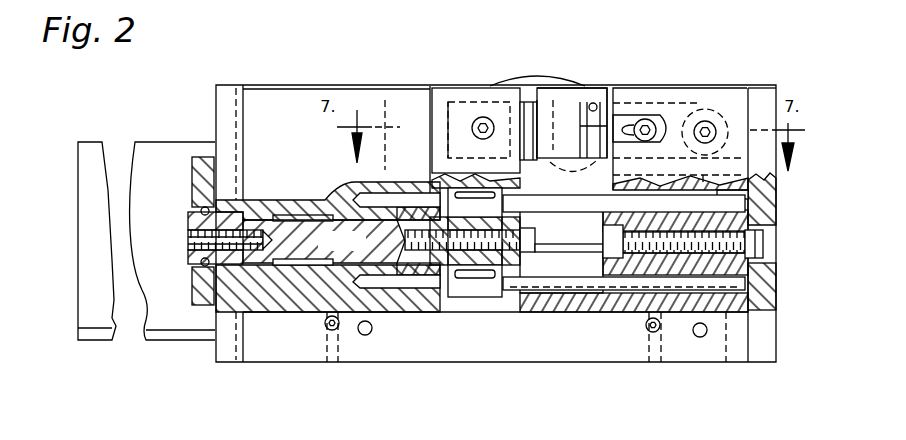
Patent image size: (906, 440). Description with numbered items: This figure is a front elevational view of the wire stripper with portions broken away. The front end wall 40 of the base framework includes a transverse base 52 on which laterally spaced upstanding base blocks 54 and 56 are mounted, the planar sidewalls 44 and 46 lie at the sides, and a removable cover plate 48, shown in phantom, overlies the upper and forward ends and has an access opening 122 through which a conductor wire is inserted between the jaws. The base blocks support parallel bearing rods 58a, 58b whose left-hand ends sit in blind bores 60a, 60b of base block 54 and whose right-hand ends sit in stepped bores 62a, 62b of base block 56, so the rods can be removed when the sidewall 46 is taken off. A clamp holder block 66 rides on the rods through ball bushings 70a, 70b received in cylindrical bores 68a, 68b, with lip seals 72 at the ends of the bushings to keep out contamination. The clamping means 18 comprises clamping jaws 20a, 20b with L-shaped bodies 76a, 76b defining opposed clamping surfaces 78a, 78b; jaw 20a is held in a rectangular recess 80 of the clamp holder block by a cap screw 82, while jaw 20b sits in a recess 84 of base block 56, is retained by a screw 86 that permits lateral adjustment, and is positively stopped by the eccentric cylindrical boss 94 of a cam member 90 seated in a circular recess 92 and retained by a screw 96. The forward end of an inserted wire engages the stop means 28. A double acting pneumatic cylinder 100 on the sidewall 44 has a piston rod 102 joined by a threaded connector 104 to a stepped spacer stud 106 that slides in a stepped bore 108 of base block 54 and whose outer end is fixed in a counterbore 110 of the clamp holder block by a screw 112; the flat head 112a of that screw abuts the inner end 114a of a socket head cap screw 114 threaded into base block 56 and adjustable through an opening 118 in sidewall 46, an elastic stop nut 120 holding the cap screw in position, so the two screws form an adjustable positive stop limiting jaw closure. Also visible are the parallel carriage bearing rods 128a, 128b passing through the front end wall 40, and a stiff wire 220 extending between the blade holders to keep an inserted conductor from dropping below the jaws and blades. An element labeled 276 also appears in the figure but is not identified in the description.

The clamping means 18 is at (476, 102).
The clamping jaw 20a is at (568, 105).
The clamping jaw 20b is at (602, 110).
The stop means 28 is at (590, 102).
The front end wall 40 is at (262, 85).
The sidewall 44 is at (222, 98).
The sidewall 46 is at (763, 177).
The cover plate 48 is at (302, 85).
The transverse base 52 is at (267, 337).
The base block 54 is at (257, 107).
The base block 56 is at (641, 337).
The bearing rod 58a is at (530, 230).
The bearing rod 58b is at (560, 312).
The blind bore 60a is at (360, 195).
The blind bore 60b is at (366, 336).
The stepped bore 62a is at (760, 192).
The stepped bore 62b is at (760, 292).
The clamp holder block 66 is at (432, 88).
The cylindrical bore 68a is at (467, 188).
The cylindrical bore 68b is at (448, 312).
The ball bushing 70a is at (475, 202).
The ball bushing 70b is at (498, 297).
The lip seal 72 is at (522, 328).
The L-shaped body 76a is at (449, 100).
The L-shaped body 76b is at (668, 90).
The clamping surface 78a is at (537, 100).
The clamping surface 78b is at (597, 102).
The rectangularly shaped recess 80 is at (473, 80).
The cap screw 82 is at (493, 123).
The recess 84 is at (638, 103).
The screw 86 is at (660, 119).
The cam member 90 is at (703, 121).
The circular recess 92 is at (757, 100).
The cylindrical boss 94 is at (714, 169).
The screw 96 is at (716, 130).
The double acting pneumatic cylinder 100 is at (162, 332).
The actuating piston rod 102 is at (195, 262).
The threaded connector 104 is at (192, 236).
The stepped cylindrical spacer stud 106 is at (250, 200).
The stepped bore 108 is at (272, 194).
The counterbore 110 is at (455, 259).
The screw 112 is at (324, 240).
The head 112a is at (561, 251).
The socket head cap screw 114 is at (790, 243).
The inner end 114a is at (565, 293).
The opening 118 is at (766, 252).
The elastic stop nut 120 is at (675, 221).
The access opening 122 is at (493, 182).
The bearing rod 128a is at (330, 350).
The bearing rod 128b is at (697, 336).
The wire 220 is at (572, 123).
The cover arc 276 is at (553, 95).